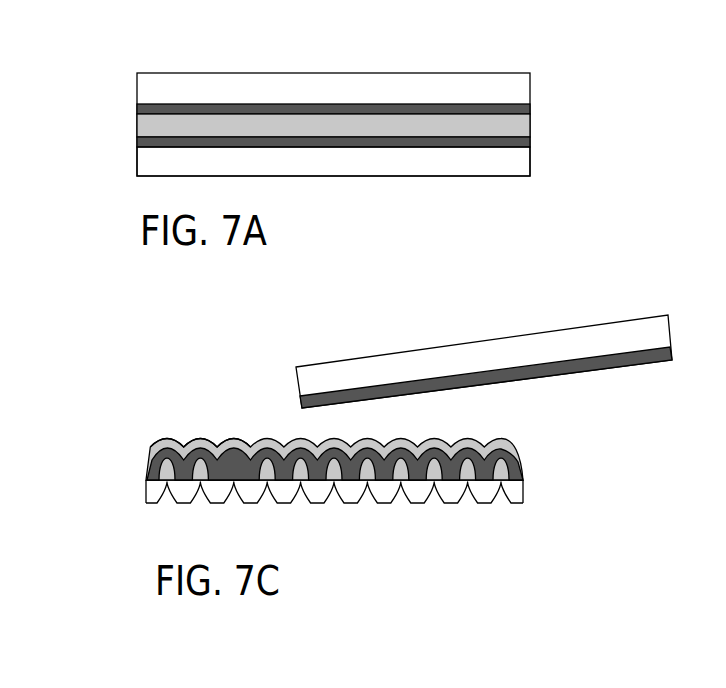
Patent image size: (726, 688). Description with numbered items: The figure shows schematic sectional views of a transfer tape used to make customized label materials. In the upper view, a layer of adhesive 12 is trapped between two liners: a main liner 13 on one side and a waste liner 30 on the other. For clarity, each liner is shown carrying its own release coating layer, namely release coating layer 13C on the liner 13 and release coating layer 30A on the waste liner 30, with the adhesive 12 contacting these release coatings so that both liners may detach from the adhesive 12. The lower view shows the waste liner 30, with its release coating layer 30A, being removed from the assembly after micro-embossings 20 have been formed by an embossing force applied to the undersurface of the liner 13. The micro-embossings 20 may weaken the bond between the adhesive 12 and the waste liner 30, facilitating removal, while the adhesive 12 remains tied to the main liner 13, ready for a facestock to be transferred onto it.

In FIG. 7A, the waste liner 30 is at (337, 85).
In FIG. 7C, the waste liner 30 is at (606, 338).
In FIG. 7A, the release coating layer 30A is at (257, 108).
In FIG. 7C, the release coating layer 30A is at (626, 362).
In FIG. 7A, the layer of adhesive 12 is at (147, 125).
In FIG. 7C, the layer of adhesive 12 is at (504, 445).
In FIG. 7A, the liner 13 is at (318, 157).
In FIG. 7C, the liner 13 is at (155, 492).
In FIG. 7A, the release coating layer 13C is at (147, 140).
In FIG. 7C, the micro-embossings 20 is at (236, 438).